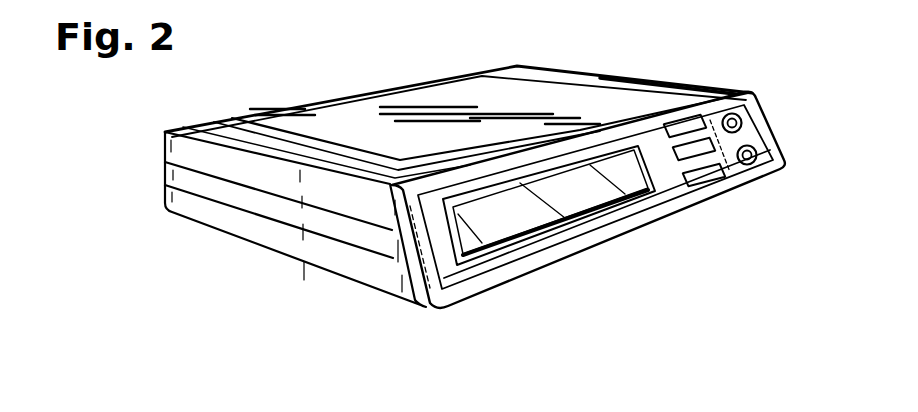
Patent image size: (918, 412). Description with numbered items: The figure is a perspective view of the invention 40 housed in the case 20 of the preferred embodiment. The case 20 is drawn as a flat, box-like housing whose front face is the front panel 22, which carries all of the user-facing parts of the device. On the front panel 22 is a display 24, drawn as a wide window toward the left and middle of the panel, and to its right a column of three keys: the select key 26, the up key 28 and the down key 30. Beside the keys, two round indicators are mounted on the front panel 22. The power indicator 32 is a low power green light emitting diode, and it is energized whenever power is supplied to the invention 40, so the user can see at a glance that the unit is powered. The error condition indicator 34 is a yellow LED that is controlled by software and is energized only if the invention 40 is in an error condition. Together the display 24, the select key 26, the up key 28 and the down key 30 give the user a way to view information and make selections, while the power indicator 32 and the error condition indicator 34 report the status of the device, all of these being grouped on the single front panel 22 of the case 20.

The case 20 is at (656, 84).
The front panel 22 is at (470, 276).
The display 24 is at (553, 218).
The select key 26 is at (726, 191).
The up key 28 is at (753, 93).
The down key 30 is at (762, 146).
The power indicator 32 is at (742, 119).
The error condition indicator 34 is at (758, 156).
The invention 40 is at (665, 233).